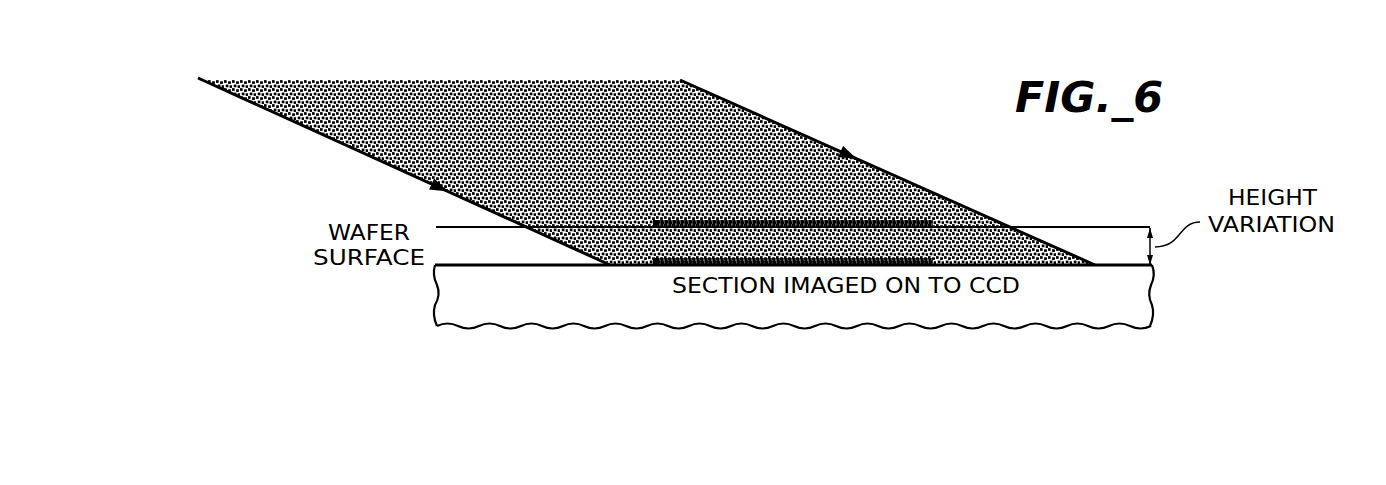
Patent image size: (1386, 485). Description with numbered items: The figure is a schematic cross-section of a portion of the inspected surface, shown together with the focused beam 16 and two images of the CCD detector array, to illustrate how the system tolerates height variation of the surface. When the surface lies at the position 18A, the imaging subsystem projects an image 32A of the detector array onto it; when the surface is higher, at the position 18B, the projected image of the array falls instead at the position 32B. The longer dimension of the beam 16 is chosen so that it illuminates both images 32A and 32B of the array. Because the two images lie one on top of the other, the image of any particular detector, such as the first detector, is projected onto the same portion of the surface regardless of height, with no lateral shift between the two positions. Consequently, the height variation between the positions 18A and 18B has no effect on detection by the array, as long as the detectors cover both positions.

The focused beam 16 is at (752, 123).
The surface position 18A is at (448, 227).
The surface position 18B is at (458, 265).
The image of the detector array 32B is at (935, 222).
The image of the detector array 32A is at (935, 258).